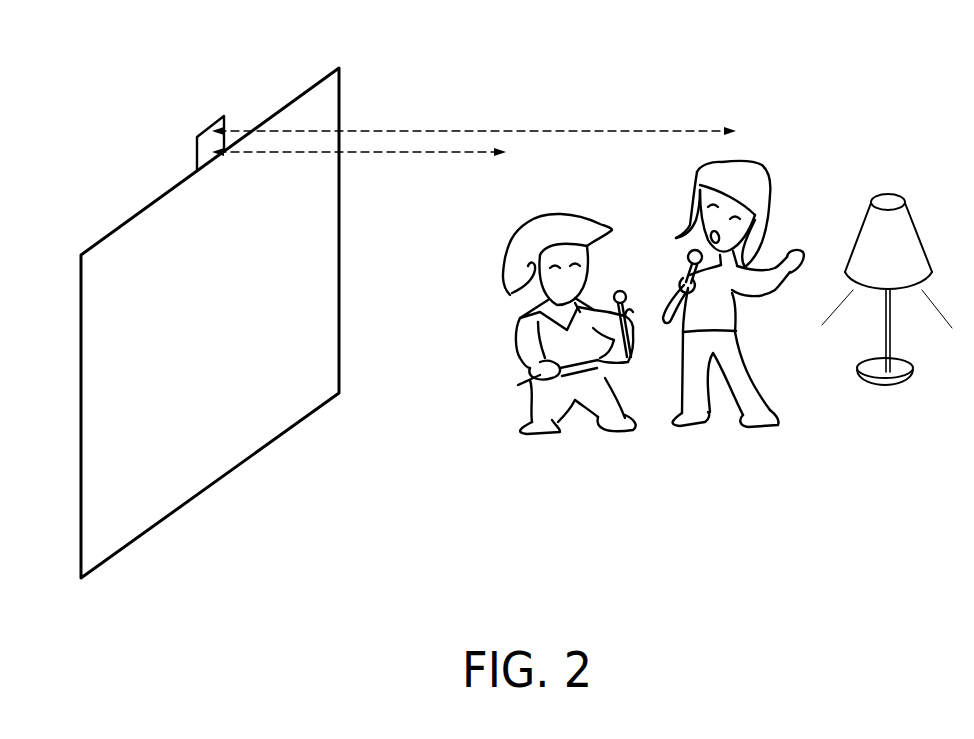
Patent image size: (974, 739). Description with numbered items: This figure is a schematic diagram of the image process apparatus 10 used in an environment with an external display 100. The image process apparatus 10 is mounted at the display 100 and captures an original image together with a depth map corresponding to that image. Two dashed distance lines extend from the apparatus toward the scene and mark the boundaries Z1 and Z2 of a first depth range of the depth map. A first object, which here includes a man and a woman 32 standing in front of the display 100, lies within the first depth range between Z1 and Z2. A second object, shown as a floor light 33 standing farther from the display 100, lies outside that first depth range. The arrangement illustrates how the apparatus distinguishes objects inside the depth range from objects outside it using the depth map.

The image process apparatus 10 is at (188, 116).
The display 100 is at (195, 540).
The woman 32 is at (772, 137).
The floor light 33 is at (915, 168).
The first depth range boundary Z1 is at (359, 167).
The first depth range boundary Z2 is at (474, 117).